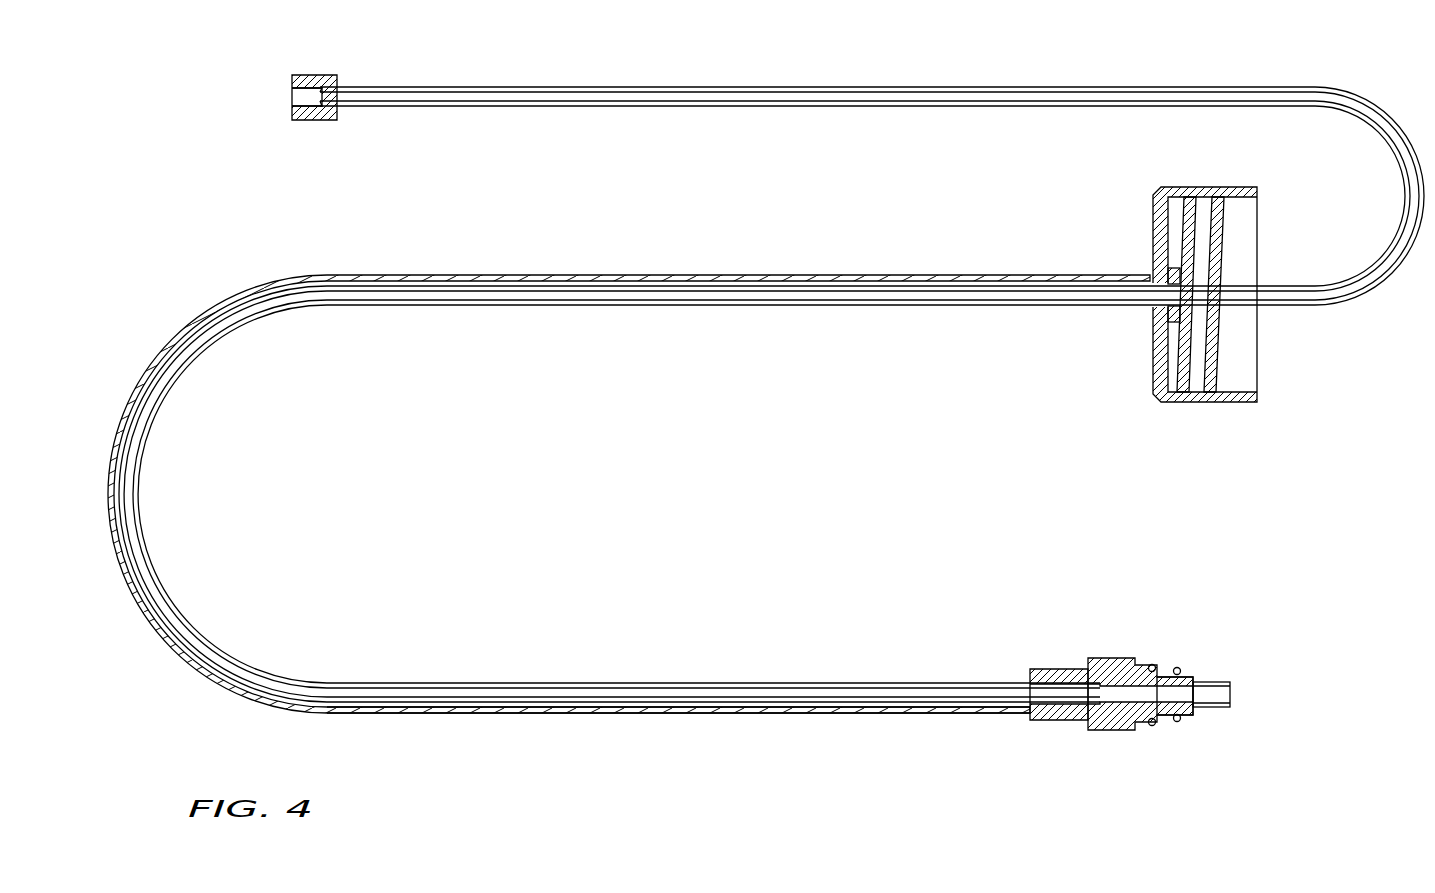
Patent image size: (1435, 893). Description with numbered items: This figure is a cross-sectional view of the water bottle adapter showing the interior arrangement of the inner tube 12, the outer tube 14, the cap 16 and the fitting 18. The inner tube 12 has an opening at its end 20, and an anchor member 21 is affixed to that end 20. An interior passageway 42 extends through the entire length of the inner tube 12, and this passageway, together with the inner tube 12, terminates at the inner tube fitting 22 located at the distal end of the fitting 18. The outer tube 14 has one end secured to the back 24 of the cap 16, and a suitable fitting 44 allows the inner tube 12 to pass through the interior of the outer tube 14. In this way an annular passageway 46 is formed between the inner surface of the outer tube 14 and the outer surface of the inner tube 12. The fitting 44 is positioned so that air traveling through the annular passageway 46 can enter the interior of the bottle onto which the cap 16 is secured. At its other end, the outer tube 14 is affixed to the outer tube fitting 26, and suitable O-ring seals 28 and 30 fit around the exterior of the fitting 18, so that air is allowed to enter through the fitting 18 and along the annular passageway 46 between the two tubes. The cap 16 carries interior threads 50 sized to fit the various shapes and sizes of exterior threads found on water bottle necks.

The inner tube 12 is at (848, 88).
The outer tube 14 is at (700, 712).
The cap 16 is at (1165, 378).
The fitting 18 is at (1108, 660).
The end 20 is at (317, 97).
The anchor member 21 is at (300, 108).
The inner tube fitting 22 is at (1218, 683).
The back 24 is at (1150, 242).
The outer tube fitting 26 is at (1086, 727).
The O-ring seal 28 is at (1178, 720).
The O-ring seal 30 is at (1152, 724).
The interior passageway 42 is at (745, 100).
The fitting 44 is at (1165, 318).
The annular passageway 46 is at (698, 308).
The interior threads 50 is at (1212, 345).